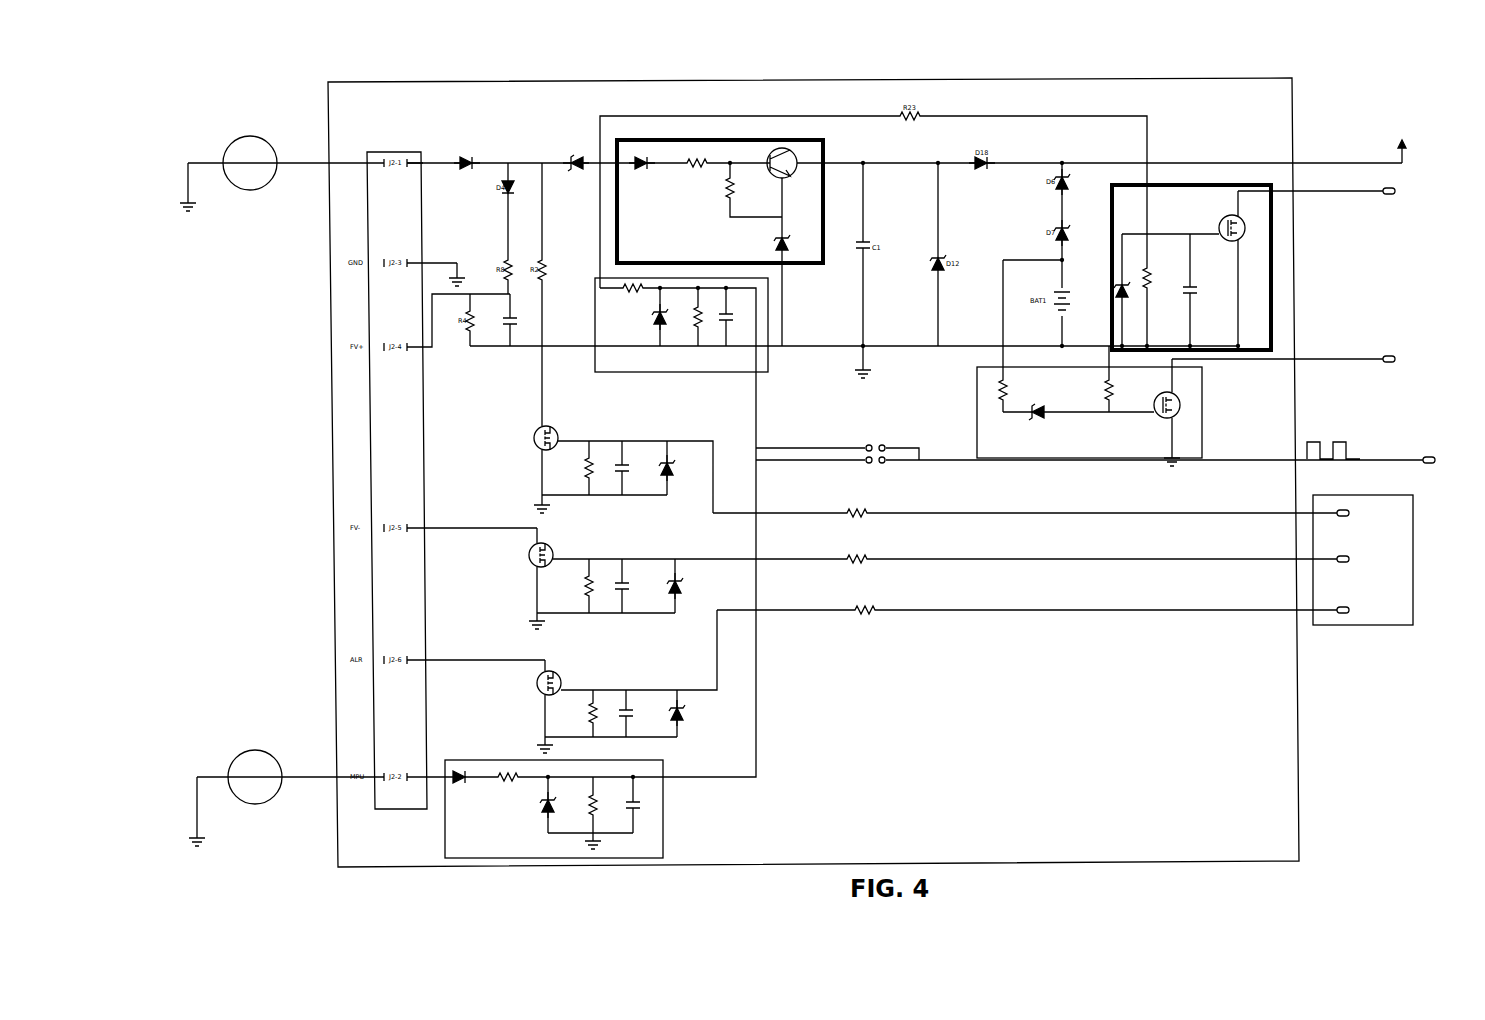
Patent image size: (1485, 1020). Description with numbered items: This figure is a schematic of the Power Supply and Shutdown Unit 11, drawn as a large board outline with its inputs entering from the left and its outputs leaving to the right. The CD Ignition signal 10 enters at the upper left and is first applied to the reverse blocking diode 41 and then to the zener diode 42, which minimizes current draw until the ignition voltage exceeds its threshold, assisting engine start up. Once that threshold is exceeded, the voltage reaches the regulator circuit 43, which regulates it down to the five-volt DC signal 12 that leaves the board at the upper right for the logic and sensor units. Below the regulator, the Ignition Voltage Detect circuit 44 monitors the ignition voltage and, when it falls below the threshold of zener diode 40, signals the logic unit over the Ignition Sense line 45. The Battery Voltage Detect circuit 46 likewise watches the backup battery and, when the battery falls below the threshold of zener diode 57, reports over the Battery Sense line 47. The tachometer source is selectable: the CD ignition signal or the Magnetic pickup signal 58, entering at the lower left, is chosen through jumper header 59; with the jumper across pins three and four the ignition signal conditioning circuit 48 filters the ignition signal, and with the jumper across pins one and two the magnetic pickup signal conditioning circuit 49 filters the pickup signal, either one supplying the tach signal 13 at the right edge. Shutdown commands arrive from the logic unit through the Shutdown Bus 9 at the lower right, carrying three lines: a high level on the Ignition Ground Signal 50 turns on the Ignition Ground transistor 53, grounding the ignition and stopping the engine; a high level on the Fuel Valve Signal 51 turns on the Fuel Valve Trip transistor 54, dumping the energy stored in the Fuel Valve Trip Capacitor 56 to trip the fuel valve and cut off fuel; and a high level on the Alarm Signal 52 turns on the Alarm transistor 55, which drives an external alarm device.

The Shutdown Bus 9 is at (1413, 595).
The CD Ignition signal 10 is at (233, 140).
The Power Supply and Shutdown Unit 11 is at (1094, 78).
The 5 VDC signal 12 is at (1362, 160).
The tach signal 13 is at (1400, 459).
The zener diode 40 is at (1122, 282).
The reverse blocking diode 41 is at (472, 153).
The zener diode 42 is at (580, 148).
The regulator circuit 43 is at (707, 138).
The Ignition Voltage Detect circuit 44 is at (1170, 227).
The Ignition Sense line 45 is at (1342, 195).
The Battery Voltage Detect circuit 46 is at (1063, 406).
The Battery Sense line 47 is at (1332, 357).
The ignition signal conditioning circuit 48 is at (667, 370).
The magnetic pickup signal conditioning circuit 49 is at (665, 848).
The Ignition Ground Signal 50 is at (1212, 512).
The Fuel Valve Signal 51 is at (1210, 557).
The Alarm Signal 52 is at (1213, 608).
The Ignition Ground transistor 53 is at (550, 425).
The Fuel Valve Trip transistor 54 is at (548, 545).
The Alarm transistor 55 is at (552, 673).
The Fuel Valve Trip Capacitor 56 is at (510, 333).
The zener diode 57 is at (1037, 412).
The Magnetic pickup signal 58 is at (258, 752).
The jumper header 59 is at (866, 443).